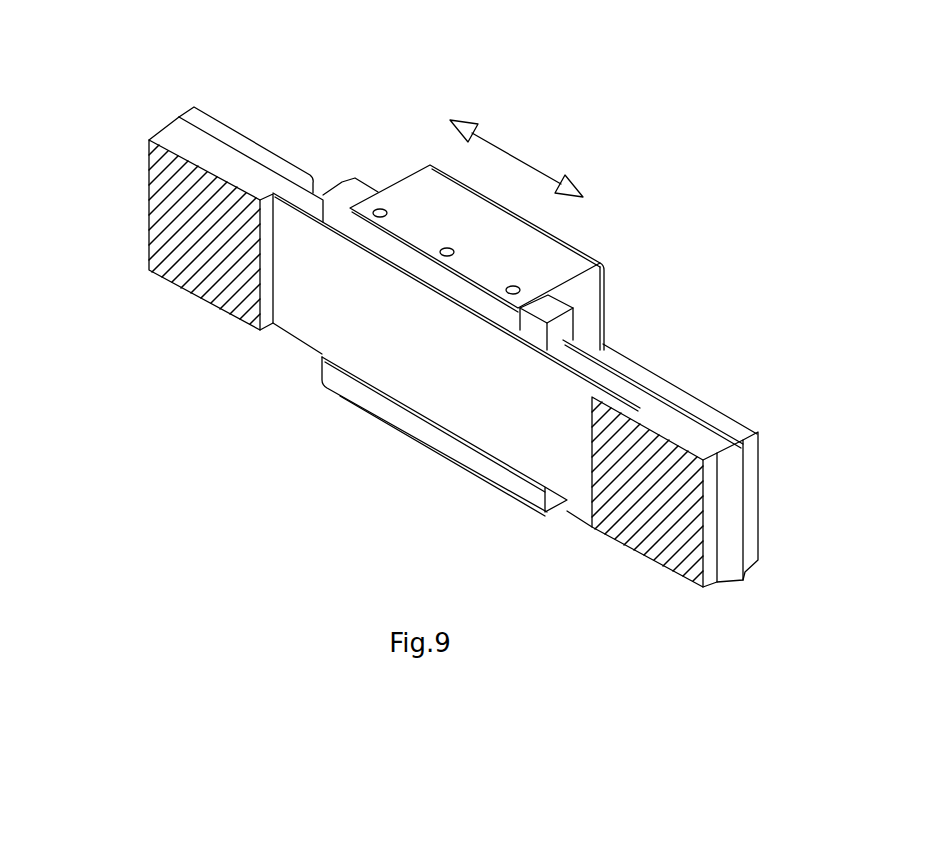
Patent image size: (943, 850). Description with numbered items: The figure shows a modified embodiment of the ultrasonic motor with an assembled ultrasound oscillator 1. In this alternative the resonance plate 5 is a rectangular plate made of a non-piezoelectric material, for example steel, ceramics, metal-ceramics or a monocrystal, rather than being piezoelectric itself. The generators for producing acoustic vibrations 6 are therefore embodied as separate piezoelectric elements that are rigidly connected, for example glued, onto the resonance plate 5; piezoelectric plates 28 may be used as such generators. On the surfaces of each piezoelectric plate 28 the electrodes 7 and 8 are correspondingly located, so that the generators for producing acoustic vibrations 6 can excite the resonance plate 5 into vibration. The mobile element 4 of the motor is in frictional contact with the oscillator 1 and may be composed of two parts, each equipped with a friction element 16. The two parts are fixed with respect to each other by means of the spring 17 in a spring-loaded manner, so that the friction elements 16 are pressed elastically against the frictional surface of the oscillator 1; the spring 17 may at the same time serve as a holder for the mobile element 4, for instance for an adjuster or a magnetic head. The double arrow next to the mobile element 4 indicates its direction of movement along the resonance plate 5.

The ultrasound oscillator 1 is at (217, 367).
The mobile element 4 is at (621, 216).
The resonance plate 5 is at (428, 345).
The generators for producing acoustic vibrations 6 is at (315, 134).
The electrode 7 is at (183, 230).
The electrode 8 is at (181, 127).
The friction element 16 is at (361, 187).
The spring 17 is at (614, 304).
The piezoelectric plate 28 is at (198, 159).